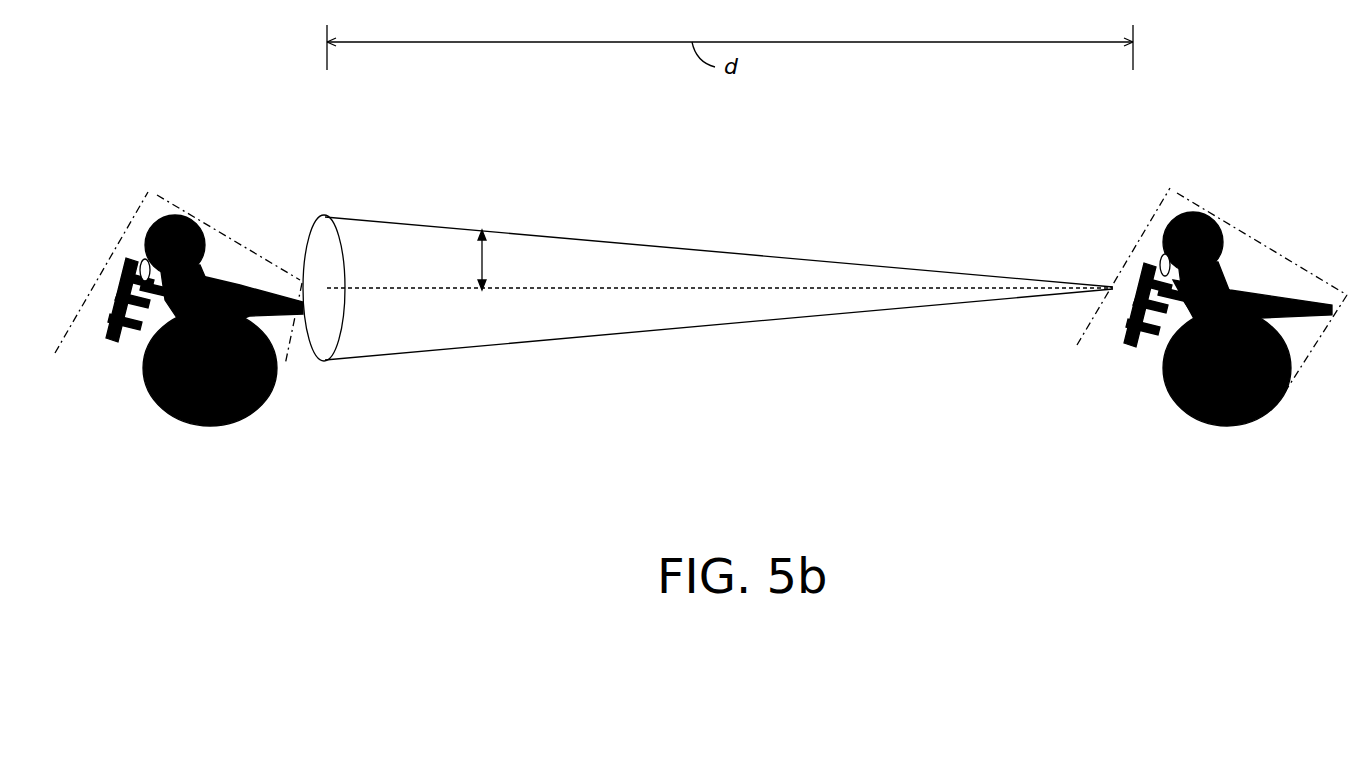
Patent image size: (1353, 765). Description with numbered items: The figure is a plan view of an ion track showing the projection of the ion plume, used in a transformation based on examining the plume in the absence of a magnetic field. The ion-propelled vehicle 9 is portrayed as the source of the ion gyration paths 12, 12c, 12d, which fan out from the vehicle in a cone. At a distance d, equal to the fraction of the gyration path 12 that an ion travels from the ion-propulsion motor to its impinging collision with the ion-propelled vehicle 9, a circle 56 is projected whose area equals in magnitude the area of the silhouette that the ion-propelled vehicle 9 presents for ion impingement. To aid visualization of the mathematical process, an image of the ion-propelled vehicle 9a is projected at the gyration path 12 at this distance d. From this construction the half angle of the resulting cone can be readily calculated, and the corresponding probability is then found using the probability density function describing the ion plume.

The ion-propelled vehicle 9 is at (1203, 210).
The image of the ion-propelled vehicle 9a is at (182, 213).
The ion gyration path 12 is at (472, 289).
The ion gyration path 12c is at (387, 221).
The ion gyration path 12d is at (343, 355).
The circle 56 is at (324, 288).